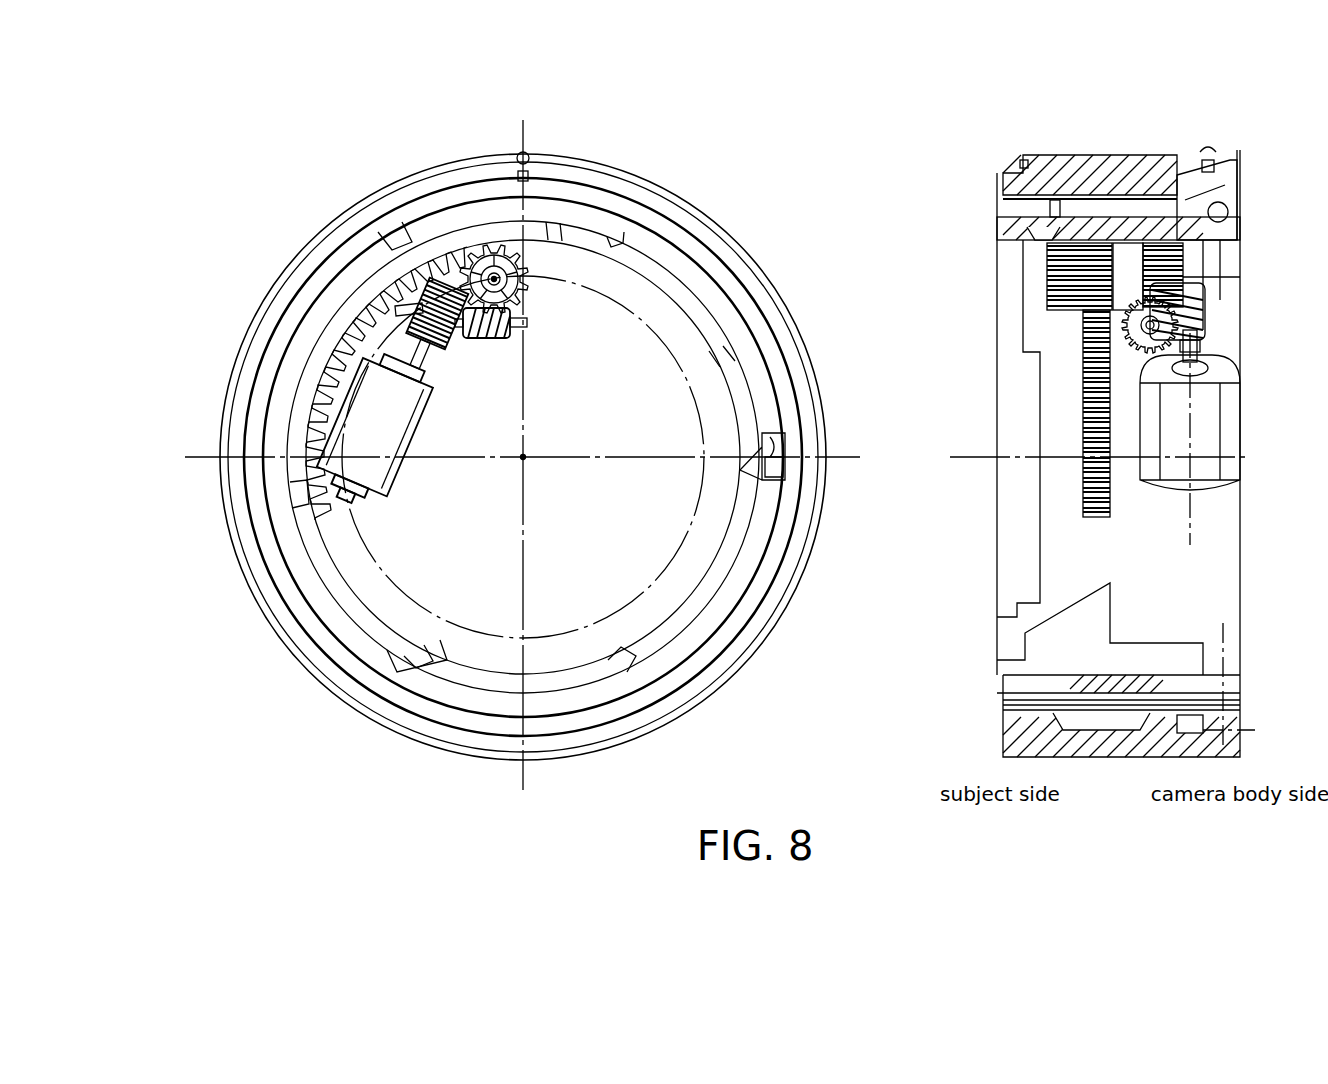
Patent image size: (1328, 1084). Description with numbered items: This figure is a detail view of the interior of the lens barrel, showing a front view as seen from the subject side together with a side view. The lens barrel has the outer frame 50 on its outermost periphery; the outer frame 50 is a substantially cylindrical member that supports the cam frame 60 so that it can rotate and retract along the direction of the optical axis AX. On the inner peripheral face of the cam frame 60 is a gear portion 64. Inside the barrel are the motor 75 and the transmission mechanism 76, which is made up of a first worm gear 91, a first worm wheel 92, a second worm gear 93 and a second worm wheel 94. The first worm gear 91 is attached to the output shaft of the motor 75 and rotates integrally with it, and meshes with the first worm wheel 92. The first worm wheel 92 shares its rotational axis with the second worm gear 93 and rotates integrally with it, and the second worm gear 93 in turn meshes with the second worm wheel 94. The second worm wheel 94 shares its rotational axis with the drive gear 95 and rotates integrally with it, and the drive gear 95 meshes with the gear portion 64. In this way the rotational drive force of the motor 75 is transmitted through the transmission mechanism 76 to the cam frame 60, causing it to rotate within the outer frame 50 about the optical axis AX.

The outer frame 50 is at (268, 590).
The cam frame 60 is at (345, 603).
The gear portion 64 is at (322, 370).
The motor 75 is at (367, 442).
The transmission mechanism 76 is at (458, 52).
The first worm gear 91 is at (390, 322).
The first worm wheel 92 is at (455, 292).
The second worm gear 93 is at (465, 278).
The second worm wheel 94 is at (1170, 298).
The drive gear 95 is at (527, 312).
The optical axis AX is at (523, 457).